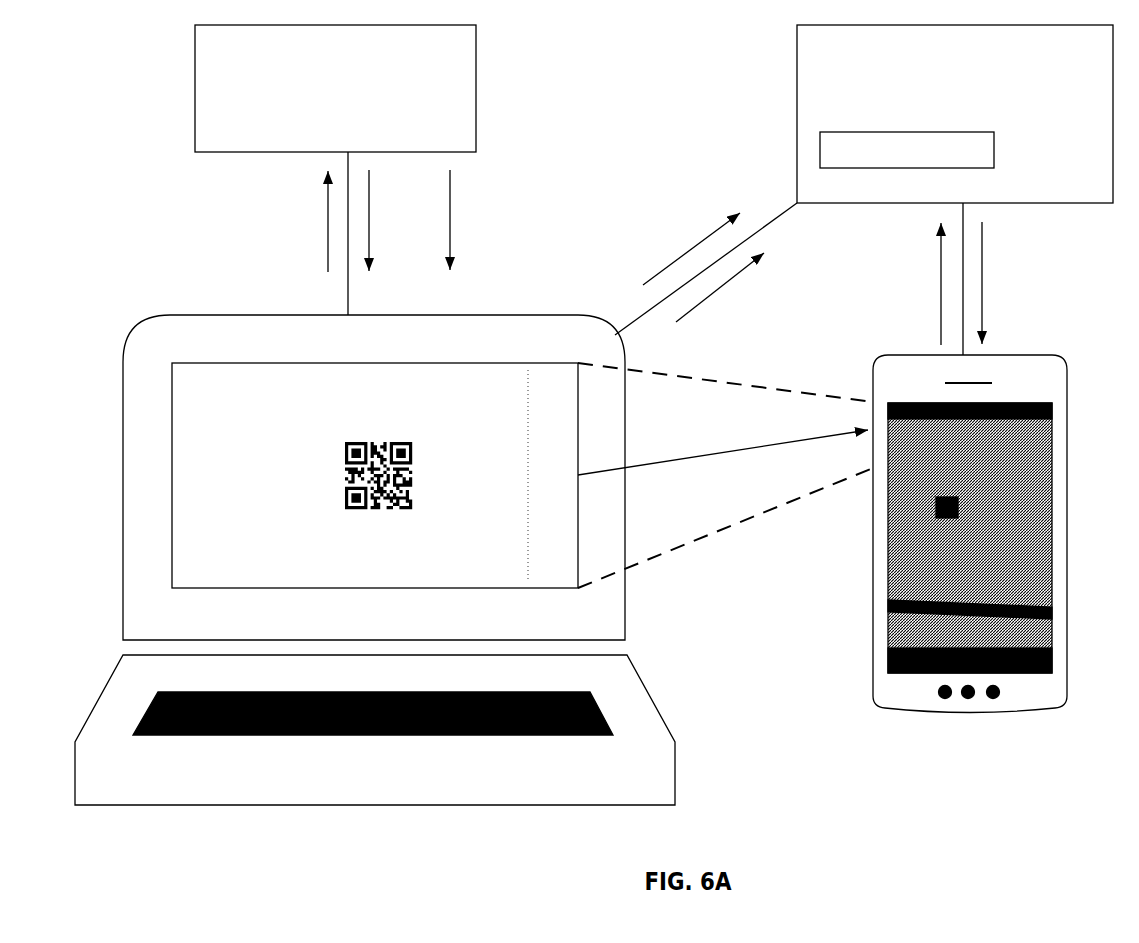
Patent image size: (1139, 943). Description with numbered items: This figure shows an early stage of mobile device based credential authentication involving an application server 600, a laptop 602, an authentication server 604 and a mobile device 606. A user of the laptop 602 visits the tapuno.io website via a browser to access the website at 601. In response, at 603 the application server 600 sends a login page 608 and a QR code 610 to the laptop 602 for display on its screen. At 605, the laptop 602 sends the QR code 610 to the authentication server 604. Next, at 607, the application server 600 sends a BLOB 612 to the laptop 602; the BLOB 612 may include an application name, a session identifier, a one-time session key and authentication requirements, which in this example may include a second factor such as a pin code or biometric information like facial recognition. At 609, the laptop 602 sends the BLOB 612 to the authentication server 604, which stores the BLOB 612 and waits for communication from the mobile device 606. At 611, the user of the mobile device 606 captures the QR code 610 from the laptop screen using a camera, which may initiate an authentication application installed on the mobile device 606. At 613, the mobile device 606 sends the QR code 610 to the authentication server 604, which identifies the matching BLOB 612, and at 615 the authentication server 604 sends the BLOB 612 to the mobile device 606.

The application server 600 is at (335, 88).
The website access step 601 is at (302, 221).
The laptop 602 is at (185, 316).
The login page and QR code display step 603 is at (401, 220).
The authentication server 604 is at (955, 114).
The QR code sending step 605 is at (657, 248).
The mobile device 606 is at (876, 617).
The BLOB sending step 607 is at (487, 220).
The login page 608 is at (252, 372).
The BLOB forwarding step 609 is at (743, 290).
The QR code 610 is at (343, 482).
The QR code capture step 611 is at (723, 468).
The BLOB 612 is at (907, 150).
The QR code sending step from mobile device 613 is at (896, 284).
The BLOB sending step to mobile device 615 is at (1044, 283).